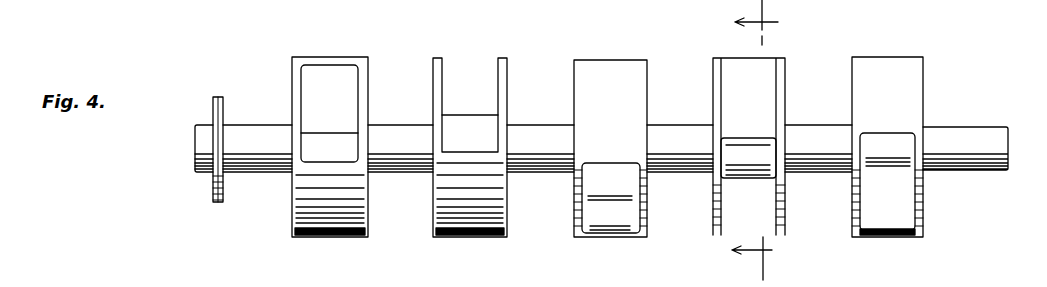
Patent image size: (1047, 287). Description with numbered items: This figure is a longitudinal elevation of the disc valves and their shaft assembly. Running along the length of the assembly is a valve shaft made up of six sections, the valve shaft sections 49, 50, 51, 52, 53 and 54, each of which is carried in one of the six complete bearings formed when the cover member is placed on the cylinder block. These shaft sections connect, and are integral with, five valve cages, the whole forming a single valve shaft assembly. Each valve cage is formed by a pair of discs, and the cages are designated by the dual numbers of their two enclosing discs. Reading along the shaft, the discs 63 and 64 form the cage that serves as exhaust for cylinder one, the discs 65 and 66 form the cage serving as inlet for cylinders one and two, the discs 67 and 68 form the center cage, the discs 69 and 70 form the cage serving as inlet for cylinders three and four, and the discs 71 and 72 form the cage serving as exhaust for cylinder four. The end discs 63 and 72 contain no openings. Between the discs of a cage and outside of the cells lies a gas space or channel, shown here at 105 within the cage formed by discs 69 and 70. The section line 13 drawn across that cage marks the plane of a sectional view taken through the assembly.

The section line 13 is at (754, 140).
The valve shaft section 49 is at (268, 173).
The valve shaft section 50 is at (405, 173).
The valve shaft section 51 is at (545, 173).
The valve shaft section 52 is at (690, 173).
The valve shaft section 53 is at (830, 173).
The valve shaft section 54 is at (983, 171).
The disc 63 is at (320, 127).
The disc 64 is at (362, 57).
The disc 65 is at (484, 127).
The disc 66 is at (502, 58).
The disc 67 is at (623, 127).
The disc 68 is at (642, 60).
The disc 69 is at (745, 149).
The disc 70 is at (745, 149).
The disc 71 is at (905, 127).
The disc 72 is at (922, 57).
The gas space 105 is at (738, 213).